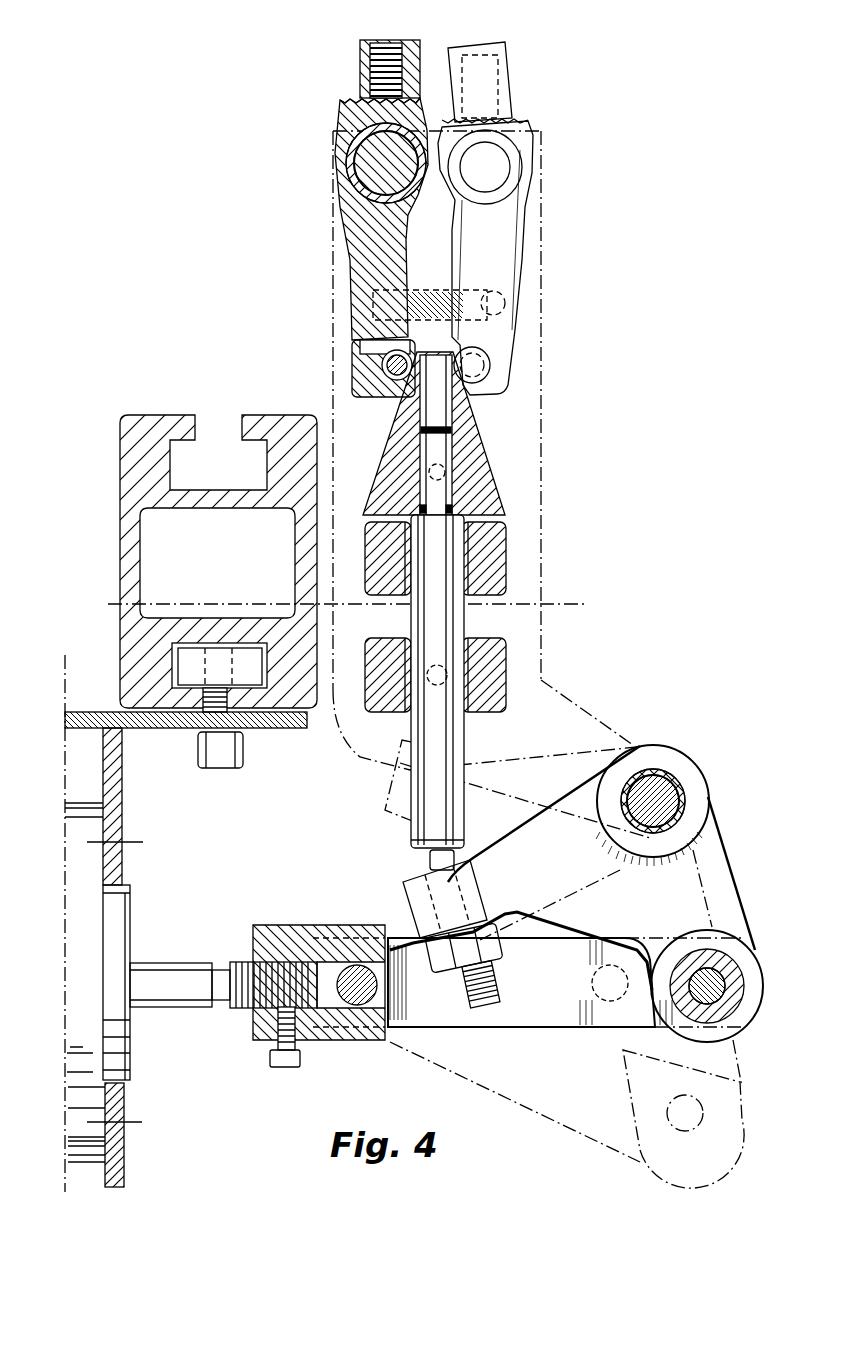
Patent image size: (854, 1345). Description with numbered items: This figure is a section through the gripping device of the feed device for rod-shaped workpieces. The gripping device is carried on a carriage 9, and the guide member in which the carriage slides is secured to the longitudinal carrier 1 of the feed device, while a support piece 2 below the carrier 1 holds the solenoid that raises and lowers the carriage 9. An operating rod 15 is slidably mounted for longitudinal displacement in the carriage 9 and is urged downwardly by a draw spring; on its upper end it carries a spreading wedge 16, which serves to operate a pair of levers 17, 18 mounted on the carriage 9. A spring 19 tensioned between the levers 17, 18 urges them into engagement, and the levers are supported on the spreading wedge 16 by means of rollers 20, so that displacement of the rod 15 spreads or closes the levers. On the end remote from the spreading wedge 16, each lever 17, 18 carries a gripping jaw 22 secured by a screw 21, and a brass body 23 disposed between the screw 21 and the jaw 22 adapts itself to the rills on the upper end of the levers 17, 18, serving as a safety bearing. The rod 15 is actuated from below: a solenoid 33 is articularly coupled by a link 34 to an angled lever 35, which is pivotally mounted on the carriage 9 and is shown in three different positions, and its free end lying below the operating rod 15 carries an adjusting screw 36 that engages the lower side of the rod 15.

The longitudinal carrier 1 is at (140, 468).
The support piece 2 is at (160, 722).
The carriage 9 is at (590, 718).
The operating rod 15 is at (455, 735).
The spreading wedge 16 is at (480, 472).
The lever 17 is at (365, 258).
The lever 18 is at (500, 248).
The spring 19 is at (470, 312).
The roller 20 is at (490, 373).
The screw 21 is at (362, 78).
The gripping jaw 22 is at (497, 70).
The brass body 23 is at (360, 100).
The solenoid 33 is at (120, 1148).
The link 34 is at (522, 1027).
The angled lever 35 is at (717, 853).
The adjusting screw 36 is at (480, 1013).